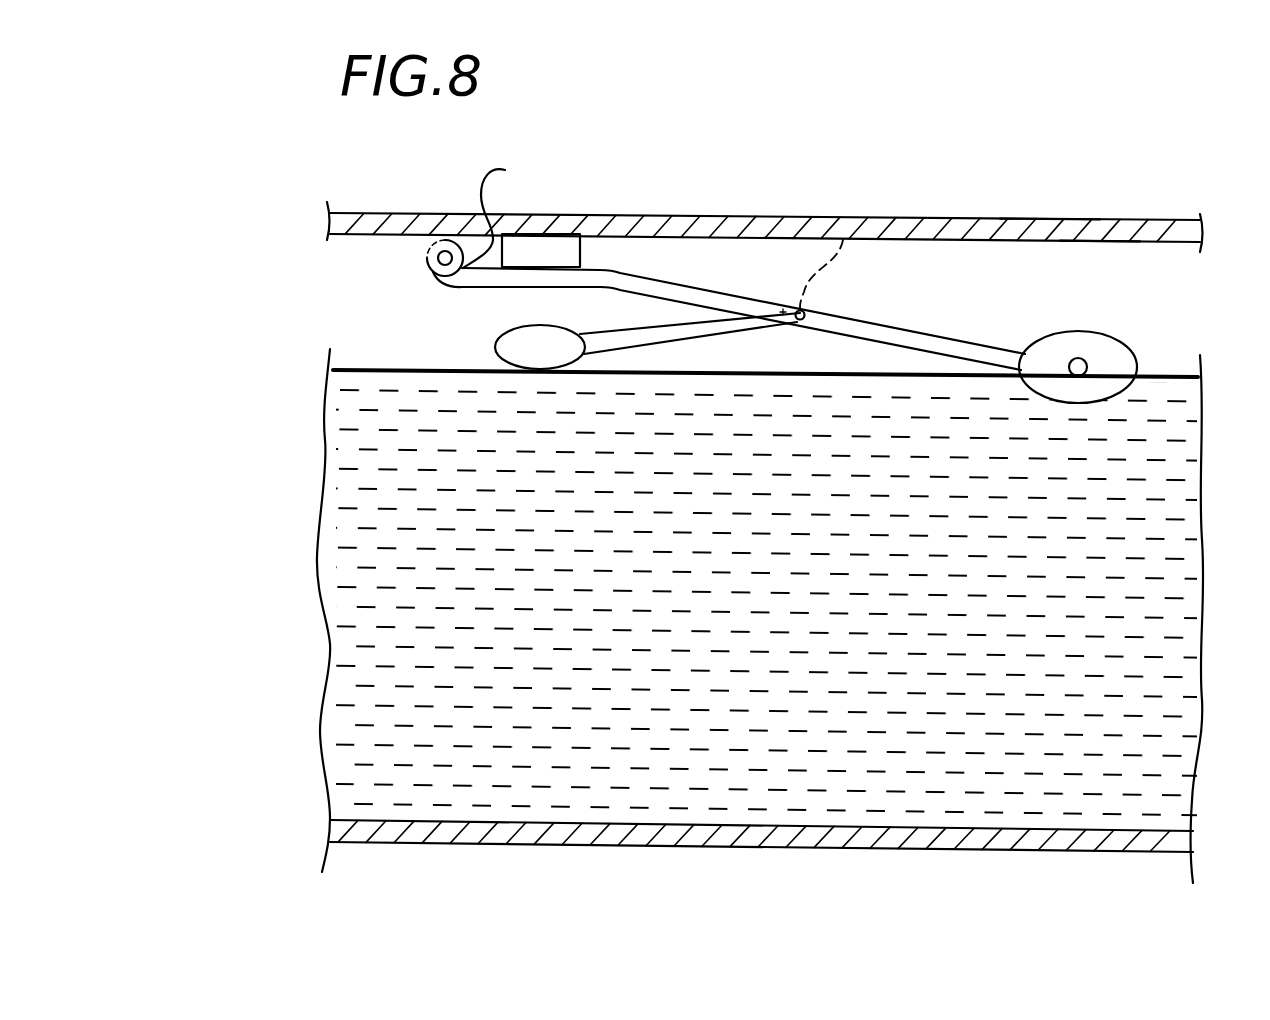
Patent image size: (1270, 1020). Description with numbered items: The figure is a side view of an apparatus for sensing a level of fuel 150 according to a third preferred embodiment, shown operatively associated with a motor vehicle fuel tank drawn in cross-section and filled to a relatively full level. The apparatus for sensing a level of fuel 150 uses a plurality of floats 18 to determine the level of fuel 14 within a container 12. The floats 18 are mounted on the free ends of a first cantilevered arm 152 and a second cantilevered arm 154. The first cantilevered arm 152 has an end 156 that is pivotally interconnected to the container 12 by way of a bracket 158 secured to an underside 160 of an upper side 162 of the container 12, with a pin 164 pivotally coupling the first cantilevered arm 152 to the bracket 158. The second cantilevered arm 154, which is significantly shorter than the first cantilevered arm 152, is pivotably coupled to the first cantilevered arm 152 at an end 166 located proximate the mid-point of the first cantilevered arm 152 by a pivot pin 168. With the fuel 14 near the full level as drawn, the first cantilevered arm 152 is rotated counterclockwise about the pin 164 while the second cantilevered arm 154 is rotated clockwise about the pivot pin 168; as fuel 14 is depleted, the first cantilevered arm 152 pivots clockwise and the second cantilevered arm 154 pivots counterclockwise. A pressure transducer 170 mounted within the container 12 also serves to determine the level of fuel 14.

The container 12 is at (950, 226).
The fuel 14 is at (344, 543).
The floats 18 is at (1107, 357).
The apparatus for sensing a level of fuel 150 is at (677, 257).
The first cantilevered arm 152 is at (906, 326).
The second cantilevered arm 154 is at (726, 340).
The end 156 is at (511, 212).
The bracket 158 is at (427, 240).
The underside 160 is at (1103, 240).
The upper side 162 is at (1034, 222).
The pin 164 is at (438, 266).
The end 166 is at (847, 216).
The pivot pin 168 is at (806, 313).
The pressure transducer 170 is at (557, 248).